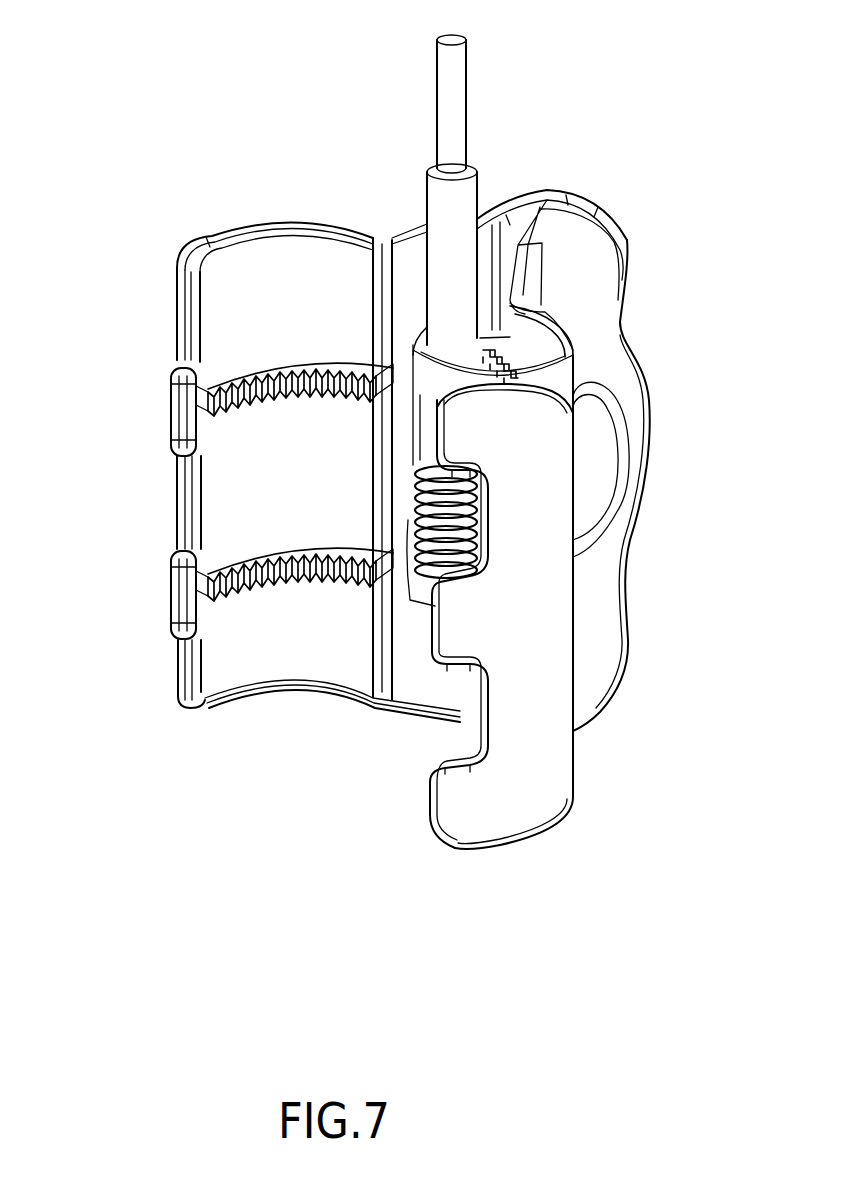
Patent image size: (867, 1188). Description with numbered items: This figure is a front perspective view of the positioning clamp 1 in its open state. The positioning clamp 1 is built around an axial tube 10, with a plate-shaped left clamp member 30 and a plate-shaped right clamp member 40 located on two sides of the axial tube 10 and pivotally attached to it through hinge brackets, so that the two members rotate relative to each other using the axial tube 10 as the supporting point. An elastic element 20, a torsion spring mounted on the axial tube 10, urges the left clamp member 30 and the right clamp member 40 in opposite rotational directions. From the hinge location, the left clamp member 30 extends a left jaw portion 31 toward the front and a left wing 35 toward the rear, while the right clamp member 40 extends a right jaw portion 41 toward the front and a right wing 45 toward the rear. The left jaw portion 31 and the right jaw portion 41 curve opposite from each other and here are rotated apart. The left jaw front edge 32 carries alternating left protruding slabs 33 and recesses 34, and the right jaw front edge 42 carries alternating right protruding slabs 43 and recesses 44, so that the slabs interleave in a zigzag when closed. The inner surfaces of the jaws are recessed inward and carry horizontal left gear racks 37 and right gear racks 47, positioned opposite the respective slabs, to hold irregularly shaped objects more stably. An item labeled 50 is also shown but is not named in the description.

The positioning clamp 1 is at (658, 130).
The axial tube 10 is at (442, 188).
The elastic element 20 is at (440, 552).
The left clamp member 30 is at (530, 273).
The left jaw portion 31 is at (560, 790).
The left jaw front edge 32 is at (400, 815).
The left protruding slab 33 is at (447, 442).
The recess 34 is at (480, 550).
The left wing 35 is at (612, 530).
The left gear rack 37 is at (517, 360).
The right clamp member 40 is at (410, 248).
The right jaw portion 41 is at (300, 238).
The right jaw front edge 42 is at (118, 560).
The right protruding slab 43 is at (172, 410).
The recess 44 is at (180, 312).
The right wing 45 is at (540, 202).
The right gear rack 47 is at (276, 372).
The cable 50 is at (456, 66).